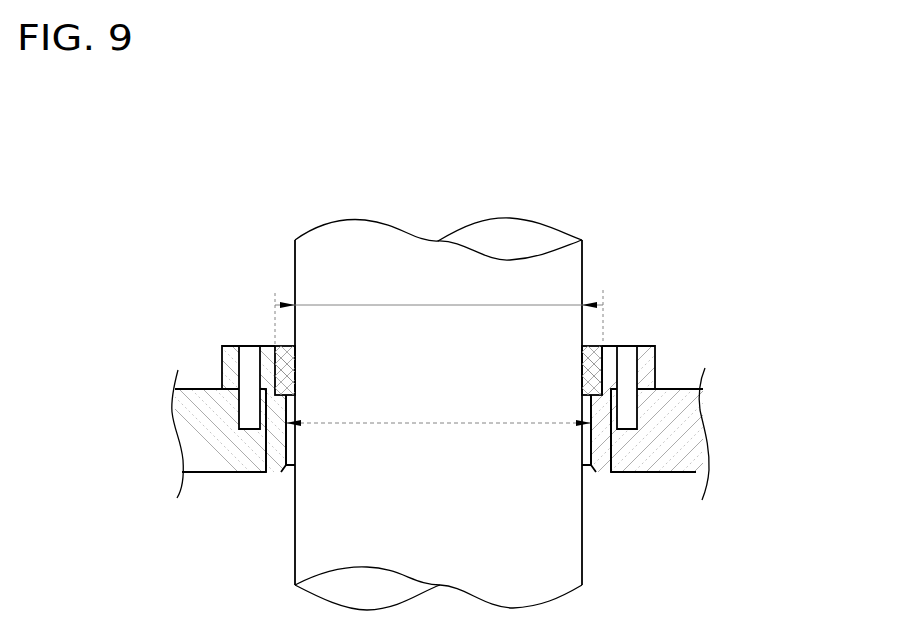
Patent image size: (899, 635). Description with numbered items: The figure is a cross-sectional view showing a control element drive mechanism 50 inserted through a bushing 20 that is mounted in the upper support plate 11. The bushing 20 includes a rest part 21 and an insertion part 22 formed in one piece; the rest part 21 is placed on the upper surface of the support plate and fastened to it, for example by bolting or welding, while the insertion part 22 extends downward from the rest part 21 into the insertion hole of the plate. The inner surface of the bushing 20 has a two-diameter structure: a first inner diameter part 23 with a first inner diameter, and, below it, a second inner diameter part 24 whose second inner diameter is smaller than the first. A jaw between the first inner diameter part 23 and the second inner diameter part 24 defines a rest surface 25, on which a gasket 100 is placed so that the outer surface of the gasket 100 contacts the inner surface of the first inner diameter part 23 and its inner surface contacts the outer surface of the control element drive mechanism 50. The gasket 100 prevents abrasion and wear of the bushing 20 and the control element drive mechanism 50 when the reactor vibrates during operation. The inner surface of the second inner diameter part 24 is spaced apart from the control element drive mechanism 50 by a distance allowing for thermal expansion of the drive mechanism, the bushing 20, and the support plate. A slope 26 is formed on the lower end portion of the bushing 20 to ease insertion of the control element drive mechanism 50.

The upper support plate 11 is at (682, 432).
The bushing 20 is at (361, 404).
The rest part 21 is at (232, 364).
The insertion part 22 is at (266, 452).
The first inner diameter part 23 is at (293, 369).
The second inner diameter part 24 is at (289, 436).
The rest surface 25 is at (597, 390).
The slope 26 is at (587, 473).
The control element drive mechanism 50 is at (383, 240).
The gasket 100 is at (595, 395).